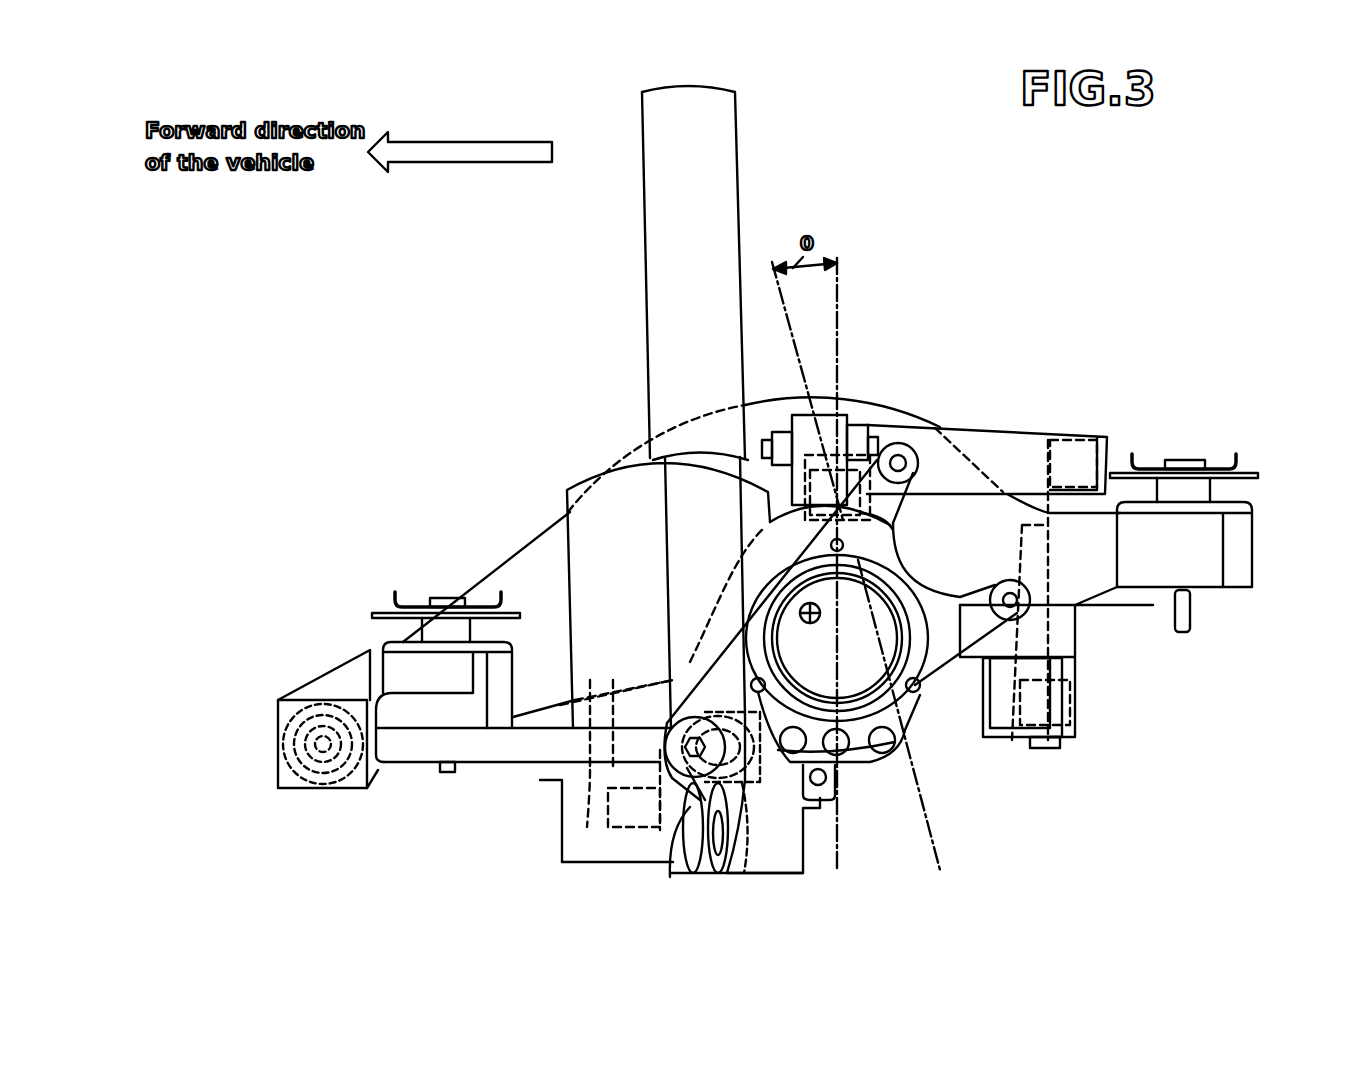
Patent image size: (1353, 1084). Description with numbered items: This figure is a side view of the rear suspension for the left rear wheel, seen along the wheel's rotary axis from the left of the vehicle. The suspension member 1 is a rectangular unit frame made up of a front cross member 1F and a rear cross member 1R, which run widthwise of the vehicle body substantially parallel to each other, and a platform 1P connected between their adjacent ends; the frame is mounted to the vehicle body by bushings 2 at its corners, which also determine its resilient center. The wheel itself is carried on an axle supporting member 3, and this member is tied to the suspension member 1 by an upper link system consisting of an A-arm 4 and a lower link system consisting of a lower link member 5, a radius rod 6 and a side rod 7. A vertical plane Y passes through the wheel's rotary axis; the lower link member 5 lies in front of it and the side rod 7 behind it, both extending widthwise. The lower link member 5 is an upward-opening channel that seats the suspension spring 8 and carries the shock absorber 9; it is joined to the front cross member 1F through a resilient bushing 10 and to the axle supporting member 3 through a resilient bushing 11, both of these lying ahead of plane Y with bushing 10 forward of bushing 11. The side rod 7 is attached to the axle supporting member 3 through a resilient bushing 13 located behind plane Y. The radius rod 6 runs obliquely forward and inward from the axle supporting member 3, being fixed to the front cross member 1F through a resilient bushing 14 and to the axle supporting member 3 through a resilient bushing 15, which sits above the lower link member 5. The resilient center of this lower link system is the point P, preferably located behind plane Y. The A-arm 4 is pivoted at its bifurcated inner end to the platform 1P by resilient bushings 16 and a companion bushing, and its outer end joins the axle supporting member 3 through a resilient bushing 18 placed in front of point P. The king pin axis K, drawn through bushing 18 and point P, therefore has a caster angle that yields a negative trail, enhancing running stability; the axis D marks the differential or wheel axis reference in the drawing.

The suspension member 1 is at (498, 566).
The platform 1P is at (527, 550).
The front cross member 1F is at (377, 653).
The rear cross member 1R is at (1137, 597).
The bushings 2 is at (412, 738).
The axle supporting member 3 is at (940, 660).
The A-arm 4 is at (1022, 432).
The lower link member 5 is at (620, 855).
The radius rod 6 is at (498, 765).
The side rod 7 is at (1000, 740).
The suspension spring 8 is at (593, 465).
The shock absorber 9 is at (650, 300).
The resilient bushing 10 is at (613, 845).
The resilient bushing 11 is at (760, 860).
The resilient bushing 13 is at (1053, 760).
The resilient bushing 14 is at (300, 780).
The resilient bushing 15 is at (662, 845).
The resilient bushing 16 is at (1105, 440).
The resilient bushing 18 is at (862, 430).
The king pin axis K is at (773, 264).
The vertical plane Y is at (843, 277).
The resilient center of the lower link system P is at (953, 826).
The differential axis D is at (812, 627).